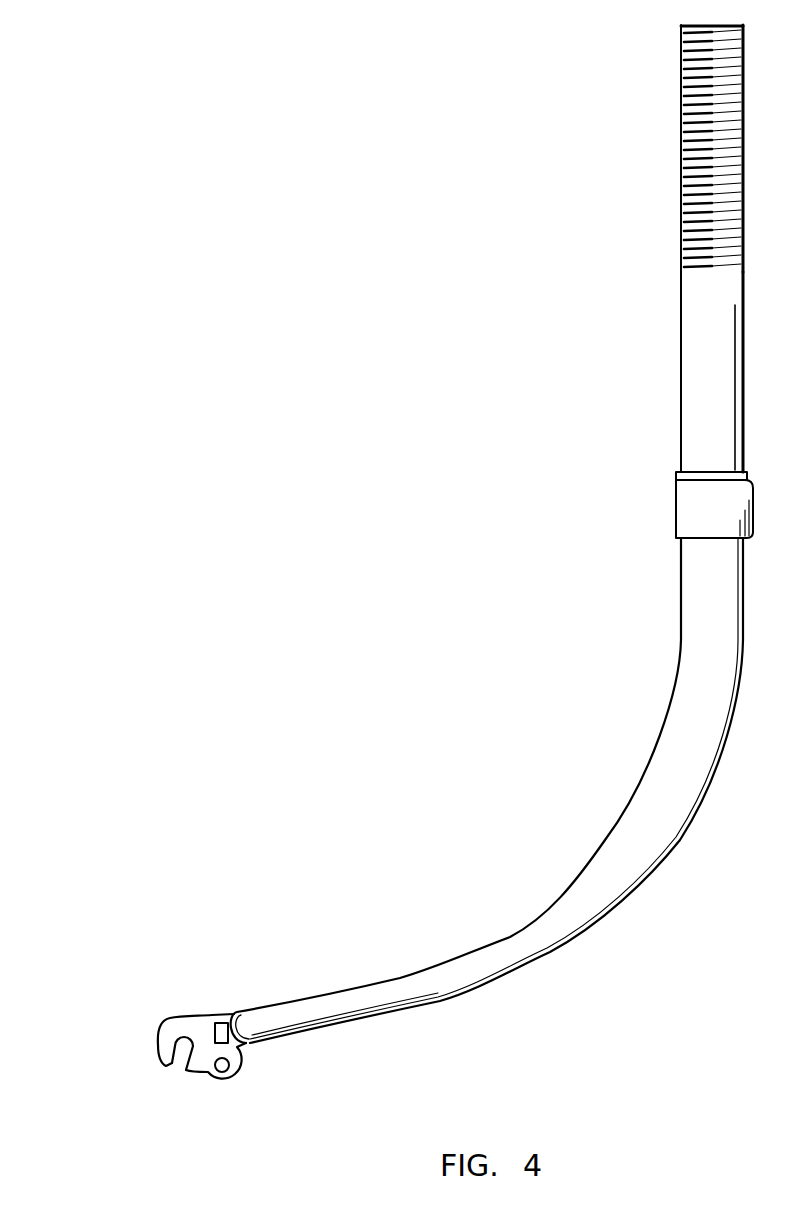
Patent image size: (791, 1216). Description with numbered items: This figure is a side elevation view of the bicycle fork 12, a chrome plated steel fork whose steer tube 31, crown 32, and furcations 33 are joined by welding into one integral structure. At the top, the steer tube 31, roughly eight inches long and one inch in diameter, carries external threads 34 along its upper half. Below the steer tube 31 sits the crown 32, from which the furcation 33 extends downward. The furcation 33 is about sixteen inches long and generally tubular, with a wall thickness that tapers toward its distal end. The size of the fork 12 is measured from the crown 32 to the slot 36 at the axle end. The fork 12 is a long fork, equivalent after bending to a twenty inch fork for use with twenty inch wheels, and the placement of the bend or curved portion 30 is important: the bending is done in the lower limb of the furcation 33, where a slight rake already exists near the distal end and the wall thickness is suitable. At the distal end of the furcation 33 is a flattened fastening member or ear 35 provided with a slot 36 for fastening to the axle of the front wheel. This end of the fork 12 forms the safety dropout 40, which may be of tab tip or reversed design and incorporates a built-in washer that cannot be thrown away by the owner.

The bicycle fork 12 is at (534, 622).
The curved portion 30 is at (660, 812).
The steer tube 31 is at (690, 335).
The crown 32 is at (690, 515).
The furcation 33 is at (458, 958).
The external threads 34 is at (690, 117).
The ear 35 is at (170, 1025).
The slot 36 is at (170, 1065).
The safety dropout 40 is at (122, 1049).